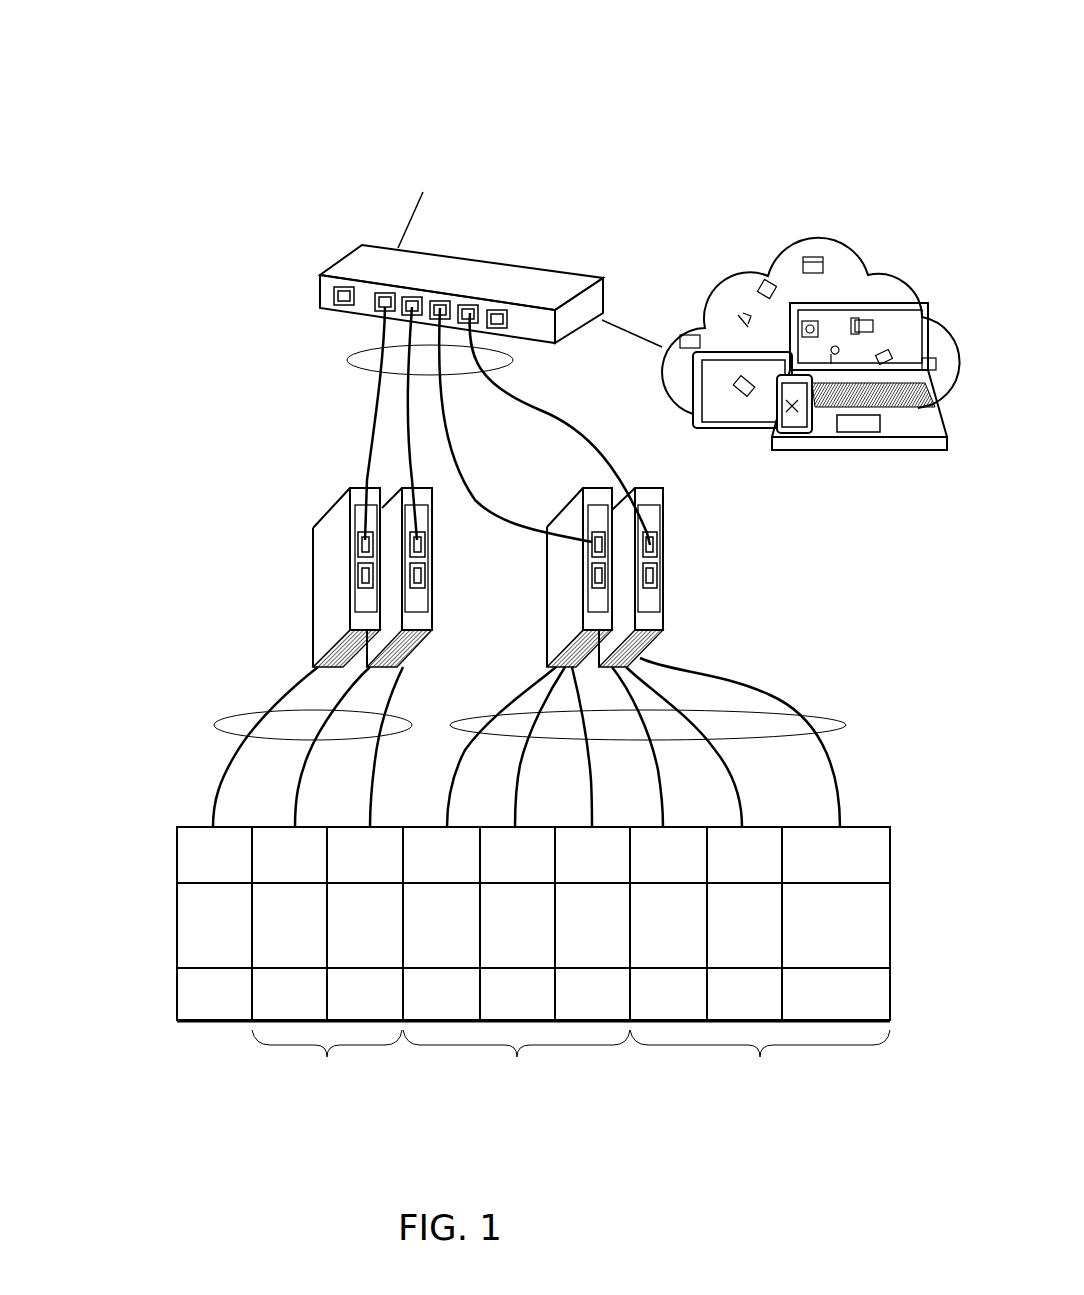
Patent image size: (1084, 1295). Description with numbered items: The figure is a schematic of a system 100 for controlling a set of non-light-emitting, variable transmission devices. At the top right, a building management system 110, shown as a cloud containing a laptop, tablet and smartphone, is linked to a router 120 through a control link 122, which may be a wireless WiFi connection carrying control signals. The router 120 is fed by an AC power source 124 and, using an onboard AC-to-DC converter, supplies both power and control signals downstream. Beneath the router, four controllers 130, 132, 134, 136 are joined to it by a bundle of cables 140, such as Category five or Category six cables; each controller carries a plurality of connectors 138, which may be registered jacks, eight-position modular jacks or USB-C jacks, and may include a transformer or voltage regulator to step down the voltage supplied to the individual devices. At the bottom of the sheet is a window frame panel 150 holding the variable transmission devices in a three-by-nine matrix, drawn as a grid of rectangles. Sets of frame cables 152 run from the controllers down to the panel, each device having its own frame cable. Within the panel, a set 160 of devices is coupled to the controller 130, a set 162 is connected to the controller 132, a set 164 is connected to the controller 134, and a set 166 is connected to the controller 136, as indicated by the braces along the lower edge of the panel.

The system 100 is at (752, 56).
The building management system 110 is at (836, 214).
The router 120 is at (521, 234).
The control link 122 is at (634, 336).
The AC power source 124 is at (396, 246).
The controller 130 is at (323, 532).
The controller 132 is at (433, 535).
The controller 134 is at (562, 598).
The controller 136 is at (663, 570).
The connectors 138 is at (356, 575).
The cables 140 is at (345, 362).
The window frame panel 150 is at (140, 912).
The frame cables 152 is at (215, 726).
The set of non-light-emitting, variable transmission devices 160 is at (222, 1022).
The set of non-light-emitting, variable transmission devices 162 is at (327, 1067).
The set of non-light-emitting, variable transmission devices 164 is at (516, 1067).
The set of non-light-emitting, variable transmission devices 166 is at (760, 1067).